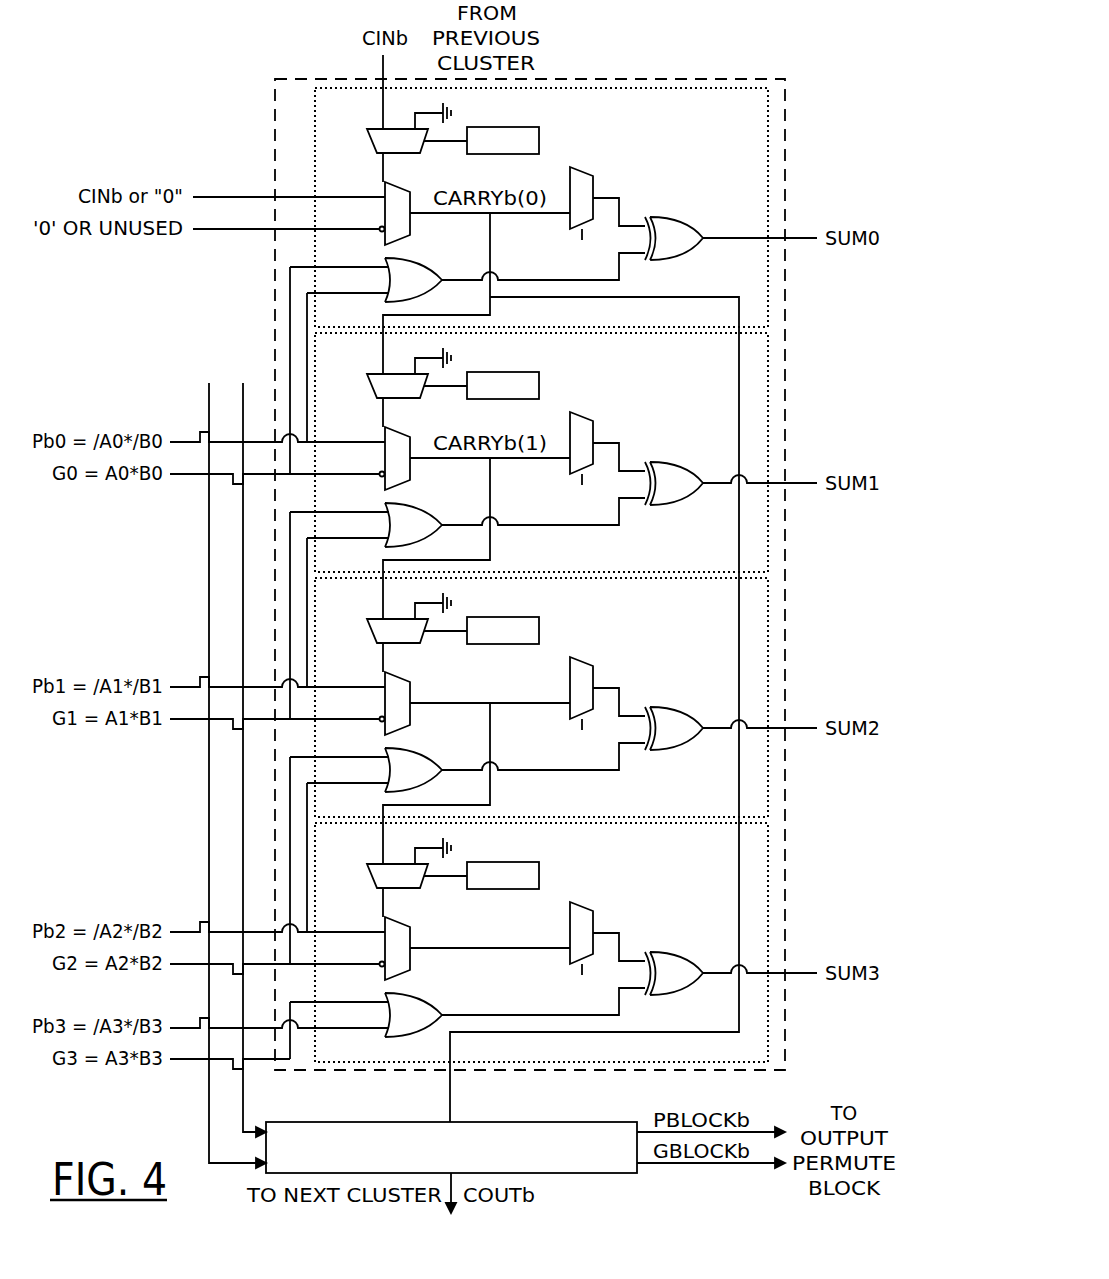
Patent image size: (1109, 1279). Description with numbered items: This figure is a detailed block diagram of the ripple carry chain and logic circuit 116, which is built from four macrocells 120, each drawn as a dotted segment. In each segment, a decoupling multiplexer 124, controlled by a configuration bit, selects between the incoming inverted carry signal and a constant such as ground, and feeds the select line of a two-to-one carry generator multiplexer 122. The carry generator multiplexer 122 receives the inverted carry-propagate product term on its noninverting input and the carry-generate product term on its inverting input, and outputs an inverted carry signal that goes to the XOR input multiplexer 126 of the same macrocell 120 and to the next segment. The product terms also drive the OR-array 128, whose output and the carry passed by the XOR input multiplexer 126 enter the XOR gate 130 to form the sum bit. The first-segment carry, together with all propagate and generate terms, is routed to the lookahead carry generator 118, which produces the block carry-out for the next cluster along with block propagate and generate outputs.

The ripple carry chain and logic circuit 116 is at (660, 79).
The lookahead carry generator 118 is at (570, 1122).
The macrocell 120 is at (723, 150).
The carry generator multiplexer 122 is at (403, 187).
The decoupling multiplexer 124 is at (368, 147).
The XOR input multiplexer 126 is at (577, 170).
The product term matrix (OR-array) 128 is at (410, 260).
The XOR gate 130 is at (667, 217).